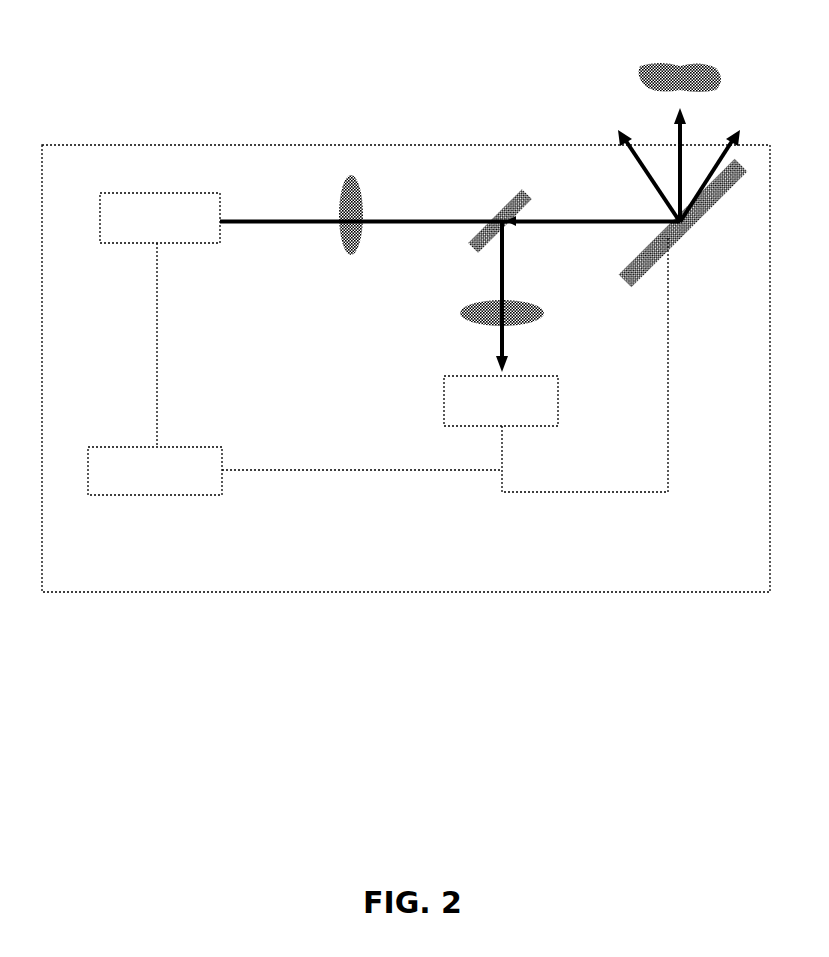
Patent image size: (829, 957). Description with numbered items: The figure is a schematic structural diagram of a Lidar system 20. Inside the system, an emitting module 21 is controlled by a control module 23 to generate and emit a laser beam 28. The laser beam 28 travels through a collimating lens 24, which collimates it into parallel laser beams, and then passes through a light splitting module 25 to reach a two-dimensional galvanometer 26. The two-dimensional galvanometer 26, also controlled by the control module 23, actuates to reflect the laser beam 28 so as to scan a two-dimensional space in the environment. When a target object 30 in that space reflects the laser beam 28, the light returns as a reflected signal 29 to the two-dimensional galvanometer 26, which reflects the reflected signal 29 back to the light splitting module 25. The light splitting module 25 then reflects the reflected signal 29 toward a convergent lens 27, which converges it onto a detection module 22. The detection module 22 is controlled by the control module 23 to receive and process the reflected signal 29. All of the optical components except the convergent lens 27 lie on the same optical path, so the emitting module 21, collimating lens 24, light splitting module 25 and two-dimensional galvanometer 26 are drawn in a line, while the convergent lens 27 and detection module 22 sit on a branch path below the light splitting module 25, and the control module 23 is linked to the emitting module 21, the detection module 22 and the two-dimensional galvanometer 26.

The Lidar system 20 is at (406, 368).
The emitting module 21 is at (170, 193).
The detection module 22 is at (558, 412).
The control module 23 is at (158, 447).
The collimating lens 24 is at (340, 203).
The light splitting module 25 is at (498, 212).
The two-dimensional galvanometer 26 is at (722, 192).
The convergent lens 27 is at (527, 323).
The laser beam 28 is at (247, 223).
The reflected signal 29 is at (557, 227).
The target object 30 is at (678, 68).